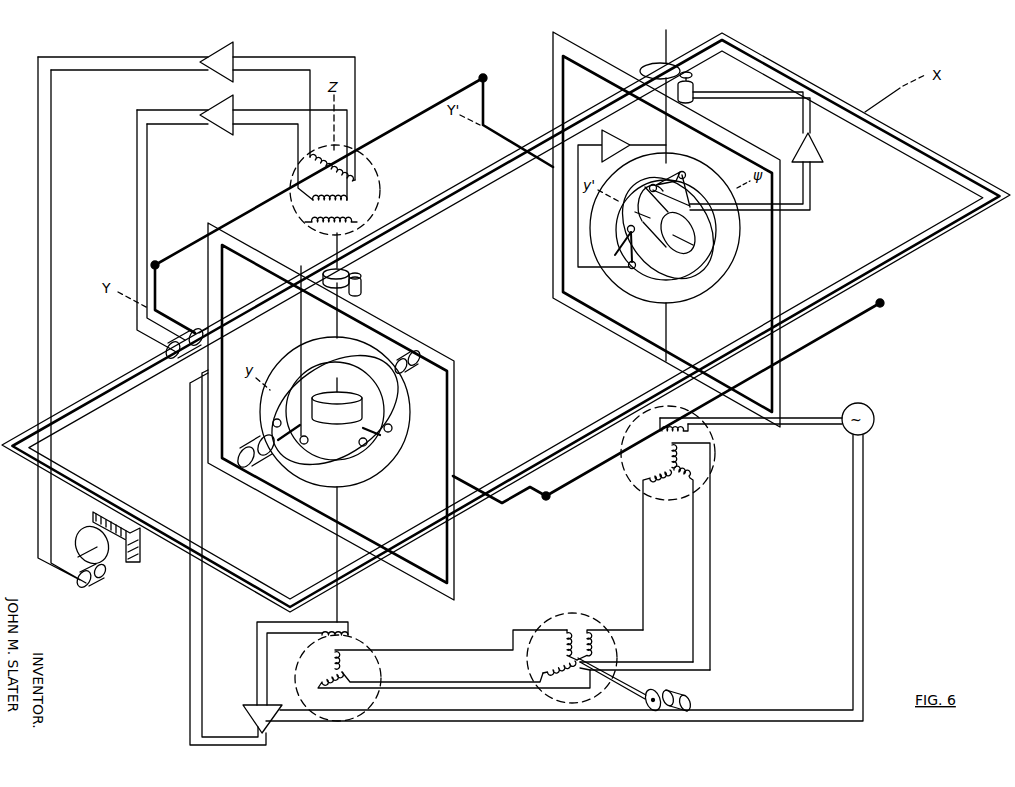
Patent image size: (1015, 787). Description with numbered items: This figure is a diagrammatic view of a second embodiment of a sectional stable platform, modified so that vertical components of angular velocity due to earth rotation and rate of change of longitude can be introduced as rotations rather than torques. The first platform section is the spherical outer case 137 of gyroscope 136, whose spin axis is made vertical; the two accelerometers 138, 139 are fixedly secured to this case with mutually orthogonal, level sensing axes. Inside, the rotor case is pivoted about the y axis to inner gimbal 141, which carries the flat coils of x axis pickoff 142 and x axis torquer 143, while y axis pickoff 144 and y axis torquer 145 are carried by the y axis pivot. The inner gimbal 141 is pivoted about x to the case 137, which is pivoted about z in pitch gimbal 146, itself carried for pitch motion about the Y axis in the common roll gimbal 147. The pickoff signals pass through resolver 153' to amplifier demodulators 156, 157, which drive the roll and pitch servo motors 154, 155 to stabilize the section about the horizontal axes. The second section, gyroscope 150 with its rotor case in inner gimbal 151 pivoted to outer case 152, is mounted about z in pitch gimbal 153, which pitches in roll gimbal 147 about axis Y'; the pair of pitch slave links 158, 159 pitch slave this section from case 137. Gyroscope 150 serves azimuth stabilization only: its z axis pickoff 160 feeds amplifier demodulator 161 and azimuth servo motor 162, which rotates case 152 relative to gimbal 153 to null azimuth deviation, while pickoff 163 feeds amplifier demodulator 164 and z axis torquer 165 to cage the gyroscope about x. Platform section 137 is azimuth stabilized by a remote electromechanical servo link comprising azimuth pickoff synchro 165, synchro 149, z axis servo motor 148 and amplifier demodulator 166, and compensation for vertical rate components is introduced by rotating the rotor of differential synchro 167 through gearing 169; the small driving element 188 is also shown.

The gyroscope 136 is at (358, 468).
The outer case 137 is at (372, 472).
The accelerometer 138 is at (243, 456).
The accelerometer 139 is at (400, 358).
The inner gimbal 141 is at (323, 432).
The x axis pickoff 142 is at (303, 444).
The x axis torquer 143 is at (274, 420).
The y axis pickoff 144 is at (392, 431).
The y axis torquer 145 is at (367, 446).
The pitch gimbal 146 is at (456, 372).
The roll gimbal 147 is at (172, 539).
The z axis servo motor 148 is at (362, 292).
The synchro 149 is at (380, 662).
The gyroscope 150 is at (682, 288).
The inner gimbal 151 is at (708, 186).
The outer case 152 is at (728, 265).
The pitch gimbal 153 is at (690, 229).
The resolver 153' is at (362, 190).
The roll servo motor 154 is at (100, 582).
The pitch servo motor 155 is at (178, 362).
The amplifier demodulator 156 is at (206, 74).
The amplifier demodulator 157 is at (206, 128).
The pitch slave link 158 is at (610, 471).
The pitch slave link 159 is at (476, 80).
The z axis pickoff 160 is at (650, 188).
The amplifier demodulator 161 is at (825, 152).
The azimuth servo motor 162 is at (696, 88).
The pickoff 163 is at (625, 268).
The amplifier demodulator 164 is at (618, 138).
The z axis torquer / azimuth pickoff synchro 165 is at (682, 171).
The amplifier demodulator 166 is at (248, 714).
The differential synchro 167 is at (530, 690).
The gearing 169 is at (646, 698).
The motor 188 is at (693, 698).